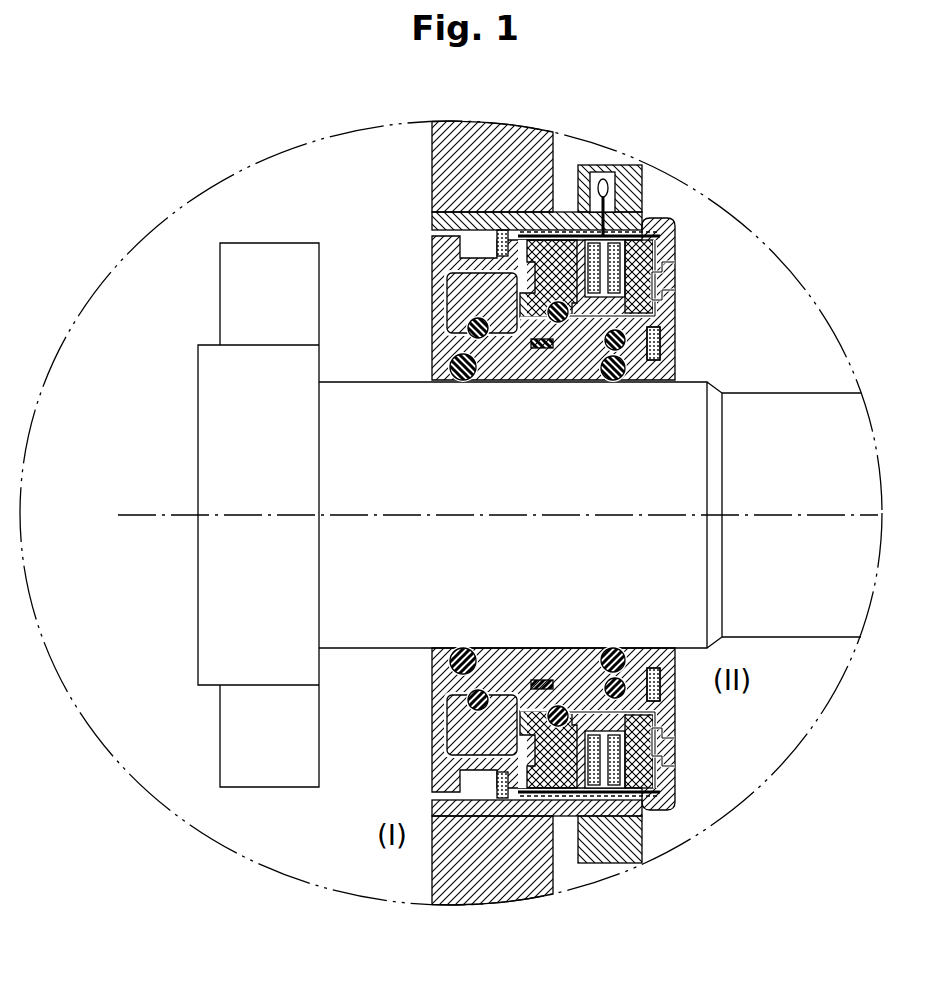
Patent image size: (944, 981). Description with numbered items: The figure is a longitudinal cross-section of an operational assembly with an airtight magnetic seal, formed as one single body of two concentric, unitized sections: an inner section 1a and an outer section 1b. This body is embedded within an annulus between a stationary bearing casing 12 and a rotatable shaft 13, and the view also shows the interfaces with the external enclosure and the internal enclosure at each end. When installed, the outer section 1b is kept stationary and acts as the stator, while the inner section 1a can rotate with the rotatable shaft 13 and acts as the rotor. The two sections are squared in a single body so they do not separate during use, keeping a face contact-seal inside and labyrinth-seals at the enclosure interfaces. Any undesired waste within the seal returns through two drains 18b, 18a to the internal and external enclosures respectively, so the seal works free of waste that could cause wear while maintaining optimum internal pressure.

The bearing casing 12 is at (455, 177).
The rotatable shaft 13 is at (758, 450).
The inner section 1a is at (593, 352).
The outer section 1b is at (628, 195).
The drain 18a is at (637, 822).
The drain 18b is at (435, 806).